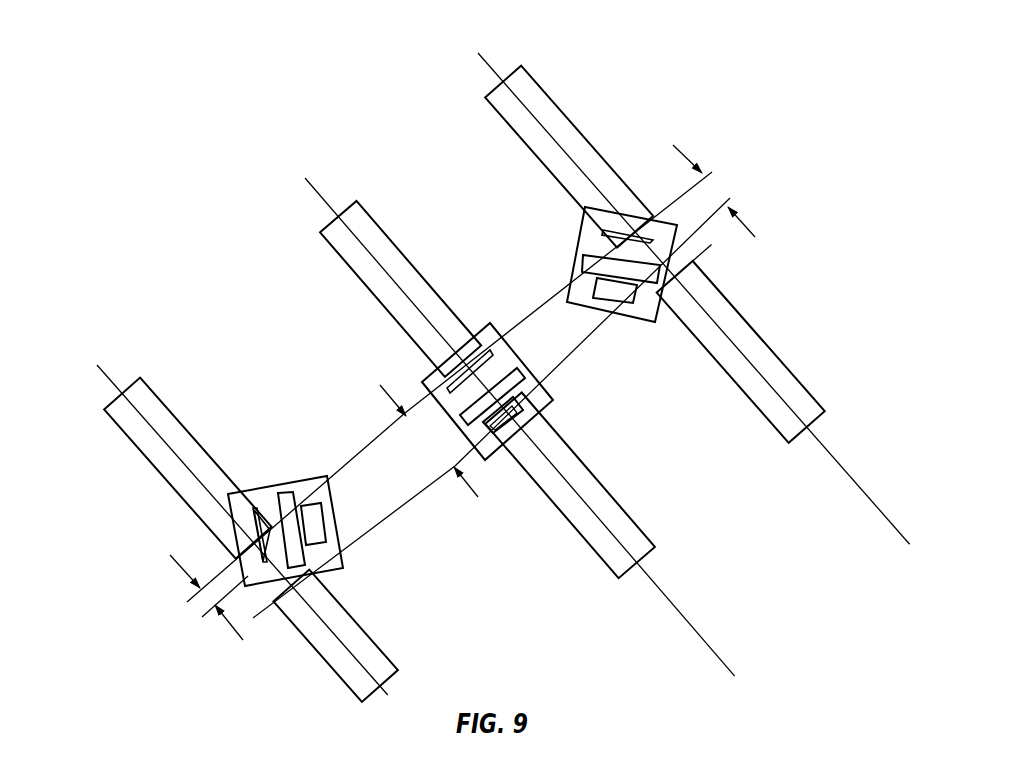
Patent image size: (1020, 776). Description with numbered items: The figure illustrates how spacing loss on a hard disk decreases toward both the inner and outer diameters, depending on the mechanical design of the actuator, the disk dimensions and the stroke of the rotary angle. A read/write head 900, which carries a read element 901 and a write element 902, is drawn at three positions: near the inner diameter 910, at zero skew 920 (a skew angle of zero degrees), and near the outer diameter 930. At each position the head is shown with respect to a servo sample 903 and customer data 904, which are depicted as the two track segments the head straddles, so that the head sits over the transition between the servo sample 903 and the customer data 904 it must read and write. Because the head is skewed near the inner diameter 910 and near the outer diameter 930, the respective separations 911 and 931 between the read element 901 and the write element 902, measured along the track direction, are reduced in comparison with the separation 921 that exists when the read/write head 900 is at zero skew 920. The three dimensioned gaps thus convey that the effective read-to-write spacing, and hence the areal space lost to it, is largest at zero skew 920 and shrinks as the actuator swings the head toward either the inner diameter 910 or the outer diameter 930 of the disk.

The read/write head 900 is at (340, 562).
The read element 901 is at (253, 514).
The write element 902 is at (308, 500).
The servo sample 903 is at (147, 463).
The customer data 904 is at (373, 644).
The inner diameter 910 is at (96, 358).
The separation near inner diameter 911 is at (170, 556).
The zero skew 920 is at (303, 175).
The separation at zero skew 921 is at (380, 388).
The outer diameter 930 is at (476, 50).
The separation near outer diameter 931 is at (753, 237).